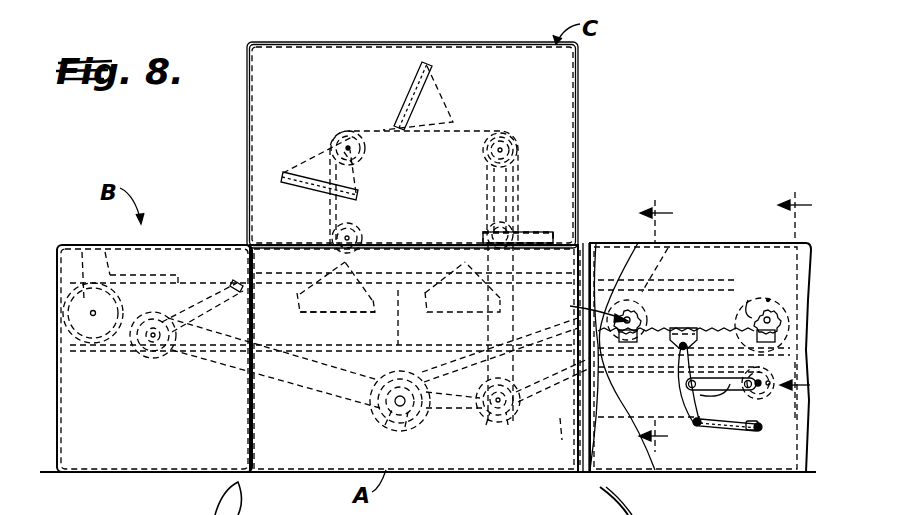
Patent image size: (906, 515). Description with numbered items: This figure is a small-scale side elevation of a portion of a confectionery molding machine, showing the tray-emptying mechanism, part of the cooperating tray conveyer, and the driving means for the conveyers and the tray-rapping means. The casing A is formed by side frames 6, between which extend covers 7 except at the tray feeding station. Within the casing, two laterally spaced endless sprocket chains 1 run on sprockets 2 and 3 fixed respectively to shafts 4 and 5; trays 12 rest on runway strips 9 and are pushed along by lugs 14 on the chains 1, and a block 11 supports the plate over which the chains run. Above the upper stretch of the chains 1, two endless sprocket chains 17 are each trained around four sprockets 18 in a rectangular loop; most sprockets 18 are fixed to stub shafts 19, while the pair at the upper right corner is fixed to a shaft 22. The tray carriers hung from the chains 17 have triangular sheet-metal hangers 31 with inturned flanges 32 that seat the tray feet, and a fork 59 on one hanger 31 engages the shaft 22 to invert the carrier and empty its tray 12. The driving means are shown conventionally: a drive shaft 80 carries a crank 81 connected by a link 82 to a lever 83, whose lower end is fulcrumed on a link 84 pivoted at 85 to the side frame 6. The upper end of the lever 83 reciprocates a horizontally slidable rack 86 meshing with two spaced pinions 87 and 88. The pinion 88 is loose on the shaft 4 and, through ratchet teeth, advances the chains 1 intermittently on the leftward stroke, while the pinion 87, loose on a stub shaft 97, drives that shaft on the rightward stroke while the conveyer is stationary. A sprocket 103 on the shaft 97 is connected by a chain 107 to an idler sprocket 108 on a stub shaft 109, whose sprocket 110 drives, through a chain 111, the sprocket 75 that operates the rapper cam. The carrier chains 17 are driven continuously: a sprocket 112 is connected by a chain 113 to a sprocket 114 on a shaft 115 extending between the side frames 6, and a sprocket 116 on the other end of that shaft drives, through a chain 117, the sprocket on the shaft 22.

The endless sprocket chains 1 is at (150, 292).
The sprocket 2 is at (770, 305).
The sprocket 3 is at (82, 252).
The shaft 4 is at (748, 300).
The shaft 5 is at (80, 310).
The side frames 6 is at (57, 368).
The covers 7 is at (497, 42).
The runway strips 9 is at (795, 295).
The block 11 is at (656, 325).
The trays 12 is at (410, 92).
The lugs 14 is at (190, 262).
The endless sprocket chains 17 is at (484, 128).
The sprockets 18 is at (366, 152).
The stub shaft 19 is at (355, 166).
The shaft 22 is at (486, 160).
The hangers 31 is at (438, 84).
The inturned flanges 32 is at (318, 316).
The fork 59 is at (250, 500).
The driving sprocket 75 is at (150, 360).
The drive shaft 80 is at (760, 398).
The crank 81 is at (775, 386).
The link 82 is at (690, 416).
The lever 83 is at (686, 384).
The link 84 is at (735, 428).
The pivot 85 is at (755, 430).
The rack 86 is at (704, 330).
The pinion 87 is at (642, 312).
The pinion 88 is at (760, 318).
The stub shaft 97 is at (587, 308).
The sprocket 103 is at (612, 270).
The chain 107 is at (460, 402).
The idler sprocket 108 is at (406, 426).
The stub shaft 109 is at (388, 424).
The sprocket 110 is at (372, 386).
The chain 111 is at (275, 393).
The sprocket 112 is at (742, 390).
The chain 113 is at (562, 438).
The sprocket 114 is at (508, 425).
The shaft 115 is at (486, 425).
The sprocket 116 is at (522, 394).
The chain 117 is at (505, 273).